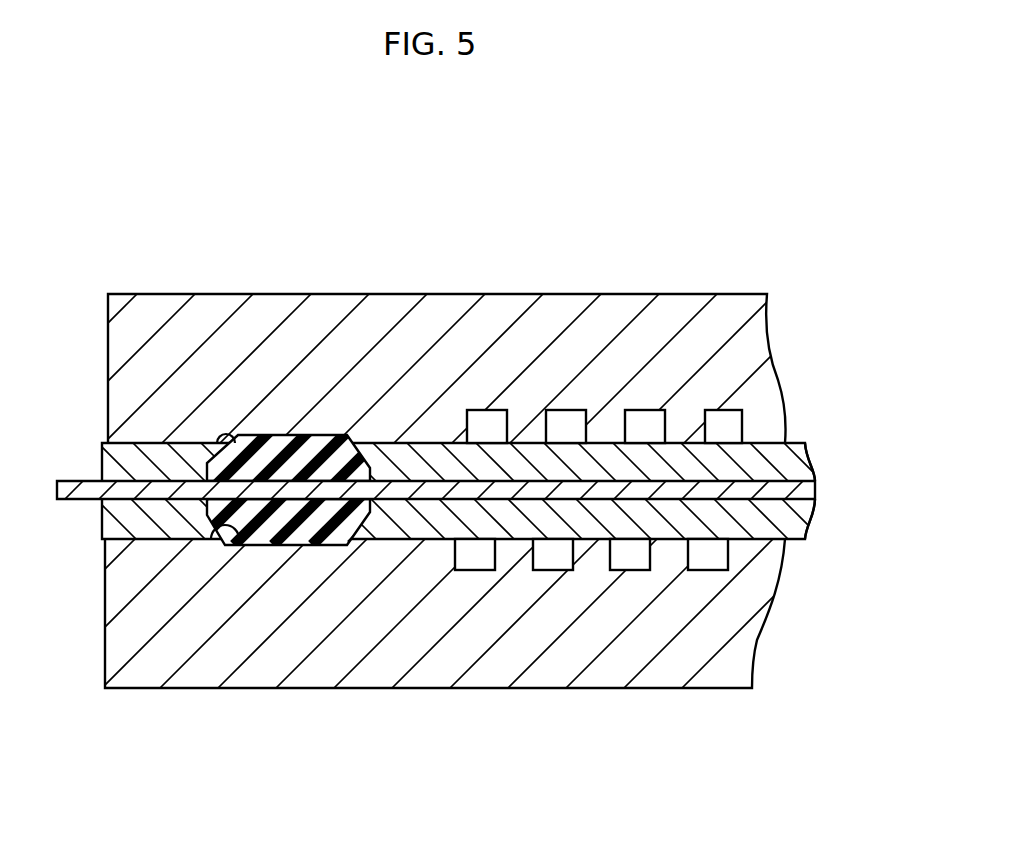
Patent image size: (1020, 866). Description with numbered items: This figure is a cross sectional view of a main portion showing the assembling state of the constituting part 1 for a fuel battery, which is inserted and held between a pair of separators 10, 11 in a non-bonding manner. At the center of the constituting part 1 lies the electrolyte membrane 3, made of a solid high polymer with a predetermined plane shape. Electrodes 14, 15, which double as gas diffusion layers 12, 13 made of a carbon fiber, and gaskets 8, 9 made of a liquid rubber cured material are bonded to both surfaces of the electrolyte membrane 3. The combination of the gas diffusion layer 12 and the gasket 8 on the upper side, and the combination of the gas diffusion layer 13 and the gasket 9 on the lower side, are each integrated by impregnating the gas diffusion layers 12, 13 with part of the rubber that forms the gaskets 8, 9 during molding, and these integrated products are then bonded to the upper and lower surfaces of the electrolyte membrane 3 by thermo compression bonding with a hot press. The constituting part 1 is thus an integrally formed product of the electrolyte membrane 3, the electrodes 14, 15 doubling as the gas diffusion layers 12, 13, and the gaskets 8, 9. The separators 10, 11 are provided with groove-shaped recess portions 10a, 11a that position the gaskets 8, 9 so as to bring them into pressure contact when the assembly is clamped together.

The constituting part for a fuel battery 1 is at (818, 444).
The electrolyte membrane 3 is at (793, 488).
The gasket 8 is at (317, 455).
The gasket 9 is at (300, 525).
The separator 10 is at (697, 294).
The groove-shaped recess portion 10a is at (224, 437).
The separator 11 is at (693, 657).
The groove-shaped recess portion 11a is at (207, 532).
The gas diffusion layer 12 is at (443, 462).
The gas diffusion layer 13 is at (442, 520).
The electrode 14 is at (570, 455).
The electrode 15 is at (565, 515).